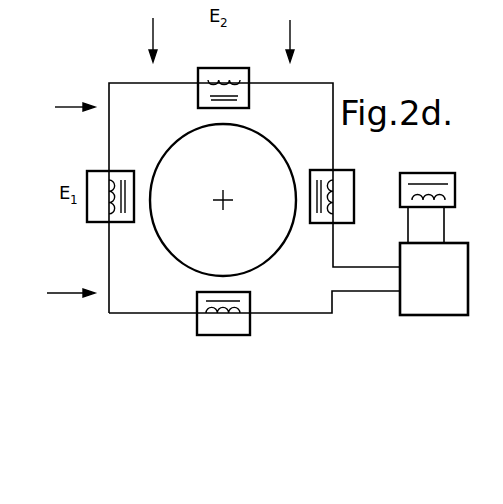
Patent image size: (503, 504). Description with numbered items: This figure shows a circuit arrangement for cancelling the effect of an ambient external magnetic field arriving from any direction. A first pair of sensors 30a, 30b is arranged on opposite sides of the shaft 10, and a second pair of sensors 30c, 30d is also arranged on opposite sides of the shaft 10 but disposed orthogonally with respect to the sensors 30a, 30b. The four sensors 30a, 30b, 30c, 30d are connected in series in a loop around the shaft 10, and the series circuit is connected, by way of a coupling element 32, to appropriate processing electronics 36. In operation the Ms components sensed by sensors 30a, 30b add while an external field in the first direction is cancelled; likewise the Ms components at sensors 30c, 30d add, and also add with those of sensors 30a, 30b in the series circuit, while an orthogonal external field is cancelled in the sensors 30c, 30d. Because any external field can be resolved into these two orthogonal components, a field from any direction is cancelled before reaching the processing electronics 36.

The shaft 10 is at (280, 147).
The sensor 30a is at (241, 50).
The sensor 30b is at (233, 325).
The sensor 30c is at (355, 184).
The sensor 30d is at (88, 222).
The coil / transformer 32 is at (423, 173).
The processing electronics 36 is at (407, 252).